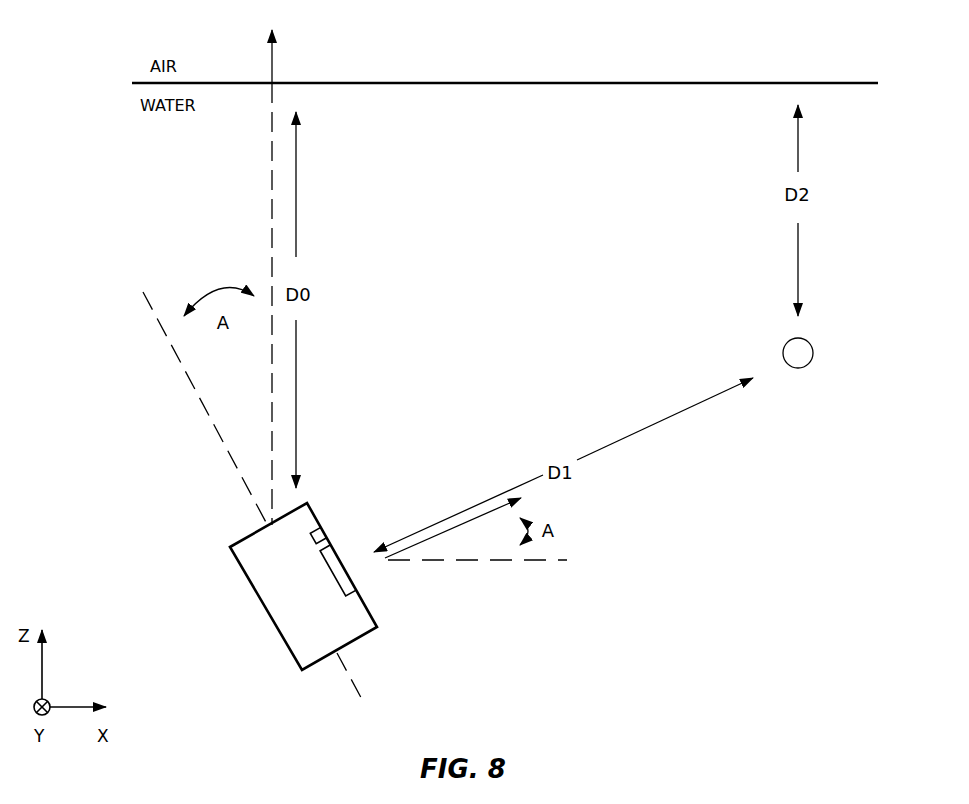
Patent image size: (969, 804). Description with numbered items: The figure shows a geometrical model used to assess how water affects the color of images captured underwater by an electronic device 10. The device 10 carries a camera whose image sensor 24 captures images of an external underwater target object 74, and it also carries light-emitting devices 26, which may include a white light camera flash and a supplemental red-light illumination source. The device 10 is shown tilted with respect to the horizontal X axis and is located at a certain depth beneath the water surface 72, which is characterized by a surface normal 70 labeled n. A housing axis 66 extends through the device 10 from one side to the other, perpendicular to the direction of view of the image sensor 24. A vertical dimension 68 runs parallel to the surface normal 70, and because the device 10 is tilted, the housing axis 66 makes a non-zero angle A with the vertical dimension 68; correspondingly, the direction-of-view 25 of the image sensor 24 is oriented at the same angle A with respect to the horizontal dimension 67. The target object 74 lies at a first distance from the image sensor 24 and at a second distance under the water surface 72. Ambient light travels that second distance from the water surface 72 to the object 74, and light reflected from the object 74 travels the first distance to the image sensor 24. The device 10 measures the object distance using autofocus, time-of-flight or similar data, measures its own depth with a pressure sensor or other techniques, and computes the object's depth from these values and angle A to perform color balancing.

The electronic device 10 is at (272, 623).
The image sensor 24 is at (346, 583).
The direction-of-view 25 is at (457, 528).
The light-emitting devices 26 is at (315, 540).
The housing axis 66 is at (222, 430).
The horizontal dimension 67 is at (557, 562).
The vertical dimension 68 is at (270, 168).
The surface normal vector 70 is at (272, 64).
The water surface 72 is at (566, 82).
The target object 74 is at (803, 368).